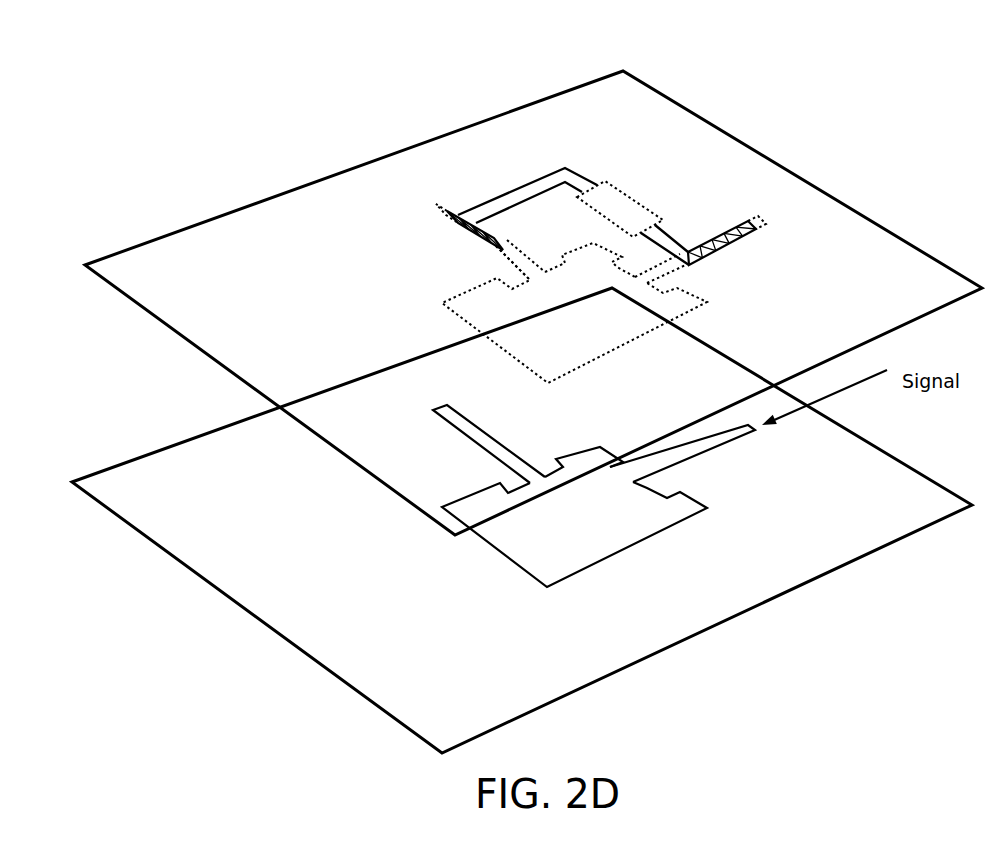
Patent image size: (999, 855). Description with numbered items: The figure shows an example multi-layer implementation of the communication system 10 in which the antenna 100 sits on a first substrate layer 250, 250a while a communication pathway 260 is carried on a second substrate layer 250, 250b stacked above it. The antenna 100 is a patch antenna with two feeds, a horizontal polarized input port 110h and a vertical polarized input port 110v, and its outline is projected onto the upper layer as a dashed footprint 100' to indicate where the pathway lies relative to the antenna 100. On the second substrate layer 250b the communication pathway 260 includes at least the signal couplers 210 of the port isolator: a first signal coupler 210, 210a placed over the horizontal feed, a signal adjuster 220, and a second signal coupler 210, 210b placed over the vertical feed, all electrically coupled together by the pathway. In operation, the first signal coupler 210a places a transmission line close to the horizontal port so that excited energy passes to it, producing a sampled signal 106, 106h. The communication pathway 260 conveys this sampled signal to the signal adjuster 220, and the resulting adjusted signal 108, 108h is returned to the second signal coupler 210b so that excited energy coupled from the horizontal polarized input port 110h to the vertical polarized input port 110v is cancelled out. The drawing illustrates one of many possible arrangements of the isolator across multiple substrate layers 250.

The communication system 10 is at (906, 52).
The substrate layer 250 is at (517, 412).
The first substrate layer 250a is at (212, 585).
The second substrate layer 250b is at (160, 320).
The communication pathway 260 is at (505, 193).
The signal adjuster 220 is at (628, 196).
The signal coupler 210 is at (568, 212).
The first signal coupler 210a is at (710, 241).
The second signal coupler 210b is at (447, 215).
The adjusted signal 108 is at (445, 283).
The adjusted sampled signal 108h is at (473, 238).
The sampled signal 106 is at (739, 271).
The sampled signal 106h is at (725, 247).
The patch antenna projection 100' is at (617, 313).
The antenna 100 is at (595, 496).
The vertical polarized input port 110v is at (460, 432).
The horizontal polarized input port 110h is at (732, 447).